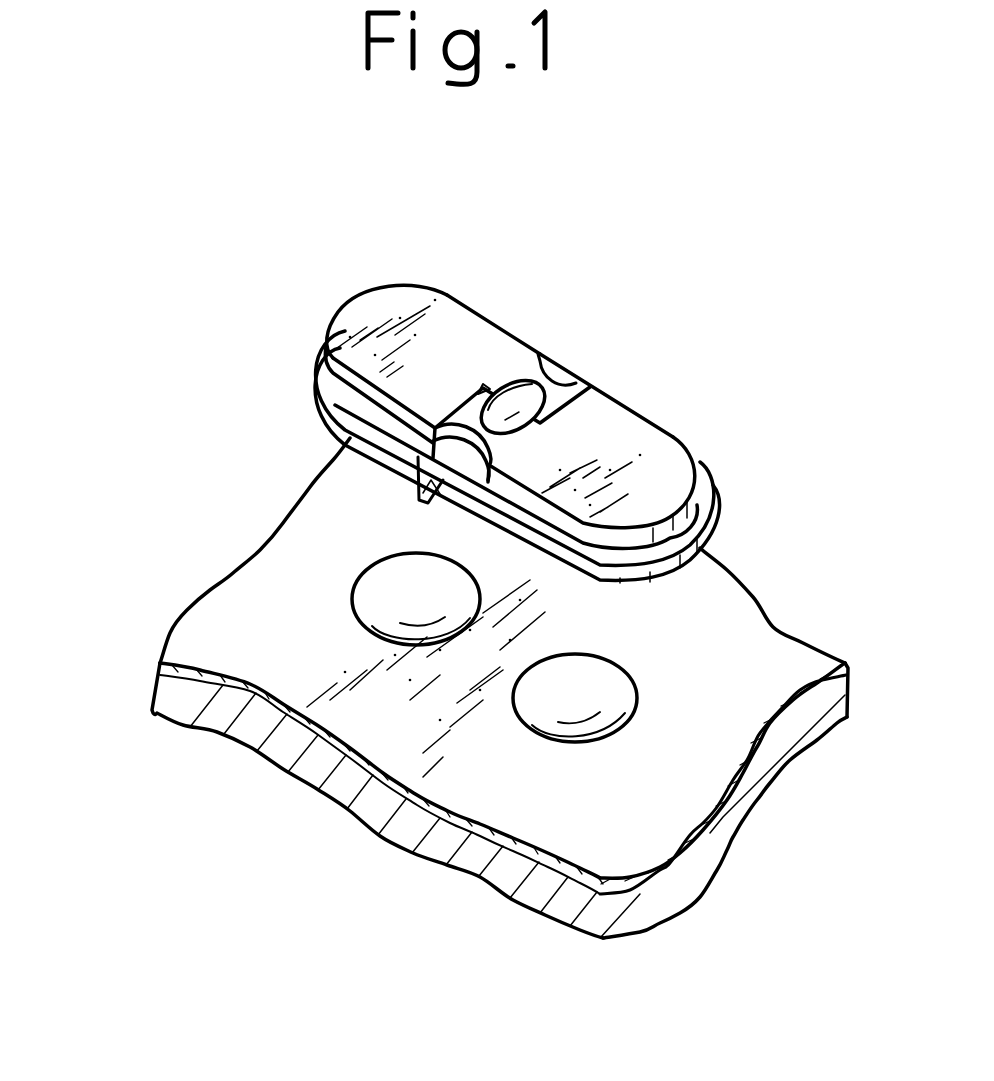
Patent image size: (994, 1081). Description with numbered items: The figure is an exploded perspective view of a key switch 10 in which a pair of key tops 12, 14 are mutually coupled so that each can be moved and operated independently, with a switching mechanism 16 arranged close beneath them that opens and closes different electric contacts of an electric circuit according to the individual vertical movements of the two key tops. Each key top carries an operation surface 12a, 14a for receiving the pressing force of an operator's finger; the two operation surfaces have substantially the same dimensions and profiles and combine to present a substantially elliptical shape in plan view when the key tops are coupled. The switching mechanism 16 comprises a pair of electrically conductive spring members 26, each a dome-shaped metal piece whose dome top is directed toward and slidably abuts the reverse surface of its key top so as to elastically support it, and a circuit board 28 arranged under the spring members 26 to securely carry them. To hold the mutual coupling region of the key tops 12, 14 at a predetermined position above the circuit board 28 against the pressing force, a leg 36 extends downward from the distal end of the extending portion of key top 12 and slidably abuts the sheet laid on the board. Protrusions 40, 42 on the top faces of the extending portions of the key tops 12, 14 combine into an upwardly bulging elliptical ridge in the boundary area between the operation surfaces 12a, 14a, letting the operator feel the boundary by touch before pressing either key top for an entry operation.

The key switch 10 is at (747, 268).
The key top 12 is at (658, 443).
The operation surface 12a is at (597, 443).
The key top 14 is at (446, 305).
The operation surface 14a is at (367, 313).
The switching mechanism 16 is at (182, 600).
The electrically conductive spring member 26 is at (380, 588).
The circuit board 28 is at (270, 758).
The leg 36 is at (417, 480).
The protrusion 40 is at (478, 397).
The protrusion 42 is at (520, 380).